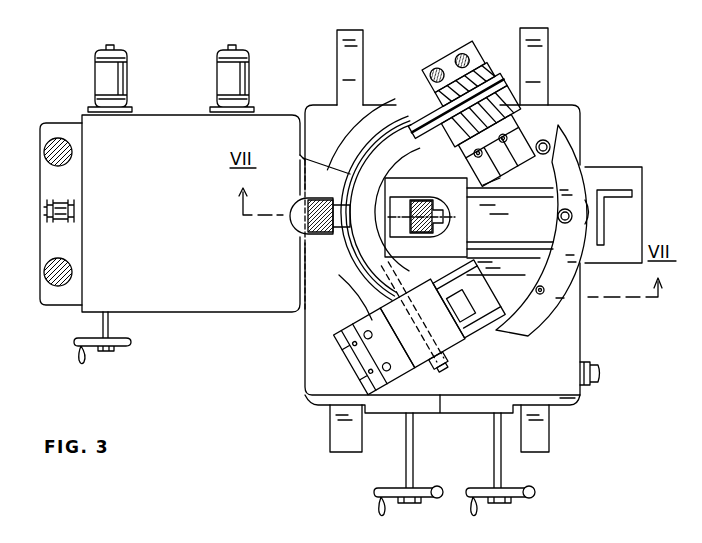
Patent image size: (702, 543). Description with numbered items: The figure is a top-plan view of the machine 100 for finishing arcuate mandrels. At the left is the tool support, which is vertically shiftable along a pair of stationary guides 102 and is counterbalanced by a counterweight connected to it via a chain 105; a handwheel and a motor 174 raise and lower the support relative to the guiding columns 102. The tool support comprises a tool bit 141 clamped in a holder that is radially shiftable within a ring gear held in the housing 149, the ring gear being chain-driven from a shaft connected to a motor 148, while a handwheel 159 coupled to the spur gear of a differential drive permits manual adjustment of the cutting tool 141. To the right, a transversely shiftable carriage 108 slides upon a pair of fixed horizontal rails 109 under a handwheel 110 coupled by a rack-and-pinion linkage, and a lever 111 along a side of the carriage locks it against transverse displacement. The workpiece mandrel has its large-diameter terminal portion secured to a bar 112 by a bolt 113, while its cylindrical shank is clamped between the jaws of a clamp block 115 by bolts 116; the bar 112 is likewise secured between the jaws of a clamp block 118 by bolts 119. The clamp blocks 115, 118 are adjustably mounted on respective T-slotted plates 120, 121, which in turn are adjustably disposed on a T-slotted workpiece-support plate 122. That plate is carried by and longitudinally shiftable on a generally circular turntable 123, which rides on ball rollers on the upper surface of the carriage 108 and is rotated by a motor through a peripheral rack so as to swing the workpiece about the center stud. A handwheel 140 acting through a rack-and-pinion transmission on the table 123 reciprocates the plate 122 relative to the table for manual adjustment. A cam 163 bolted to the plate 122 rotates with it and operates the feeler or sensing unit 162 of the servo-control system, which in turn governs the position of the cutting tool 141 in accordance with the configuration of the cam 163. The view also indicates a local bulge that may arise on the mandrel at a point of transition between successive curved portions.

The machine 100 is at (568, 98).
The stationary guides 102 is at (72, 152).
The chain 105 is at (76, 208).
The carriage 108 is at (574, 400).
The horizontal rails 109 is at (338, 445).
The handwheel 110 is at (430, 499).
The lever 111 is at (594, 372).
The bar 112 is at (386, 280).
The bolt 113 is at (440, 363).
The clamp block 115 is at (465, 102).
The bolts 116 is at (491, 38).
The clamp block 118 is at (415, 316).
The bolts 119 is at (374, 351).
The plate 120 is at (504, 166).
The plate 121 is at (469, 299).
The workpiece-support plate 122 is at (530, 283).
The turntable 123 is at (389, 104).
The handwheel 140 is at (517, 499).
The tool bit 141 is at (433, 217).
The motor 148 is at (239, 55).
The housing 149 is at (300, 237).
The handwheel 159 is at (114, 347).
The feeler or sensing unit 162 is at (590, 206).
The cam 163 is at (565, 152).
The motor 174 is at (113, 54).